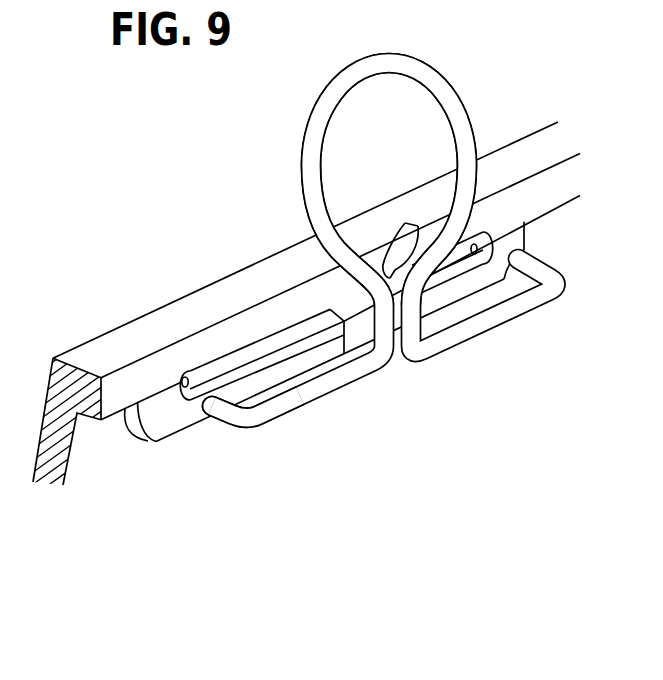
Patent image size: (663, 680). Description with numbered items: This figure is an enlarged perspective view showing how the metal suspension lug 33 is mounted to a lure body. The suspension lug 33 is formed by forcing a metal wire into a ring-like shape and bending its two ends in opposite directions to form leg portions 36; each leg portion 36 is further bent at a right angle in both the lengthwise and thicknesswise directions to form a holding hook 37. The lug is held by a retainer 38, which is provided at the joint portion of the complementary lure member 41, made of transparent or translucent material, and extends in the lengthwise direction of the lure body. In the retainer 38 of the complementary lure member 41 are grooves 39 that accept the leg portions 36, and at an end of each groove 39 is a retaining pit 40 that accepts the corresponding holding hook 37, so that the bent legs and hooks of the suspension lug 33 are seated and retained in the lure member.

The suspension lug 33 is at (398, 54).
The leg portion 36 is at (303, 415).
The holding hook 37 is at (218, 422).
The retainer 38 is at (160, 450).
The groove 39 is at (288, 322).
The retaining pit 40 is at (190, 381).
The complementary lure member 41 is at (124, 325).